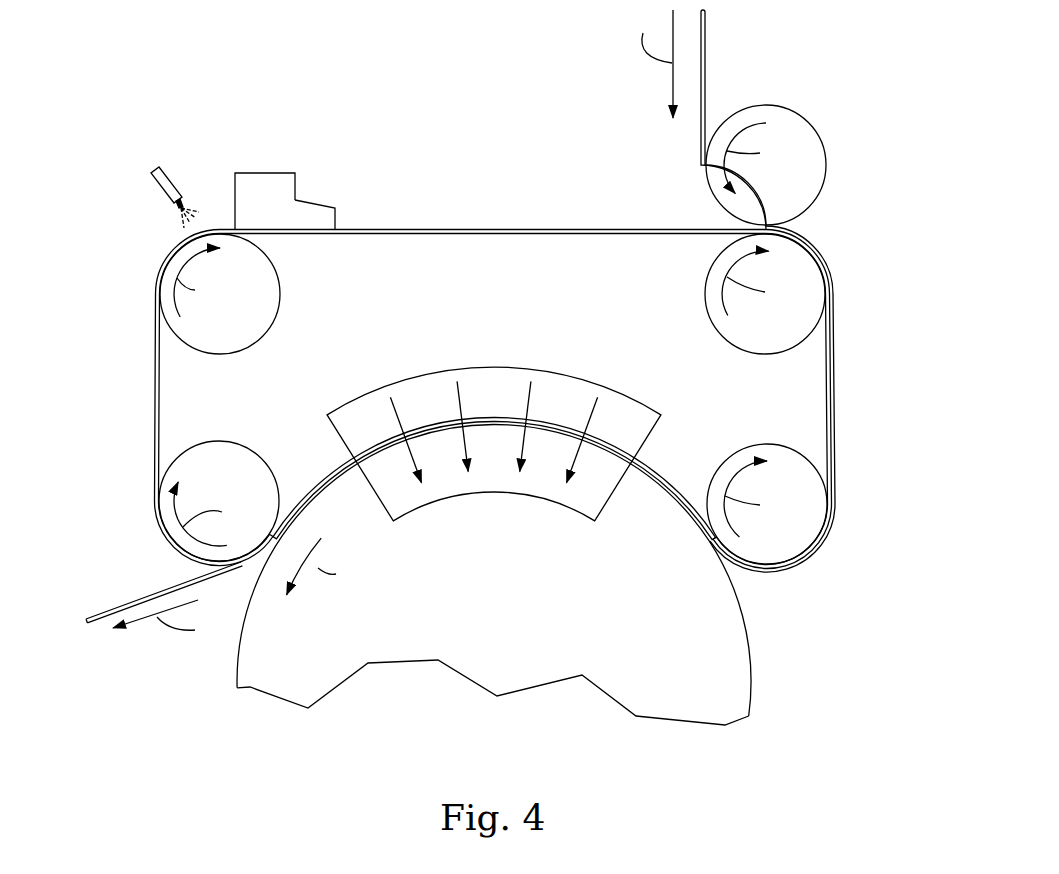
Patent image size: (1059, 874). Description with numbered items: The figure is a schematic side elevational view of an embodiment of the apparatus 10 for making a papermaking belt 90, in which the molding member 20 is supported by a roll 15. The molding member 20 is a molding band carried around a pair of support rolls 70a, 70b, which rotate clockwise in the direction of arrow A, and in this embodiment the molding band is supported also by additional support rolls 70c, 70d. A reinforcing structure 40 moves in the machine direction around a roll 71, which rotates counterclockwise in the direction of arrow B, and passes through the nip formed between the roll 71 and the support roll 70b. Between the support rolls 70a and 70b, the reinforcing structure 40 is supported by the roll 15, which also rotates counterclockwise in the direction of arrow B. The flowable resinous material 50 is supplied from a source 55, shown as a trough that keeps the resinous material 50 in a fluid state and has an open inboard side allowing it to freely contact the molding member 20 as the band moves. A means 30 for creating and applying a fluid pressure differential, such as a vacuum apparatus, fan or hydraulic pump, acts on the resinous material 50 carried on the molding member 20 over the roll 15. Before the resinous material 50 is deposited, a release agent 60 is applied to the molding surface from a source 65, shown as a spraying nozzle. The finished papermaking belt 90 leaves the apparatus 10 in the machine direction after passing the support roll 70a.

The apparatus 10 is at (187, 120).
The roll 15 is at (688, 611).
The molding member 20 is at (157, 393).
The means for creating and applying the fluid pressure differential 30 is at (630, 420).
The reinforcing structure 40 is at (703, 47).
The flowable resinous material 50 is at (302, 212).
The source 55 is at (254, 190).
The release agent 60 is at (178, 214).
The source of the release agent 65 is at (155, 167).
The support roll 70a is at (230, 470).
The support roll 70b is at (805, 527).
The support roll 70c is at (242, 288).
The support roll 70d is at (803, 302).
The roll 71 is at (802, 173).
The papermaking belt 90 is at (133, 600).